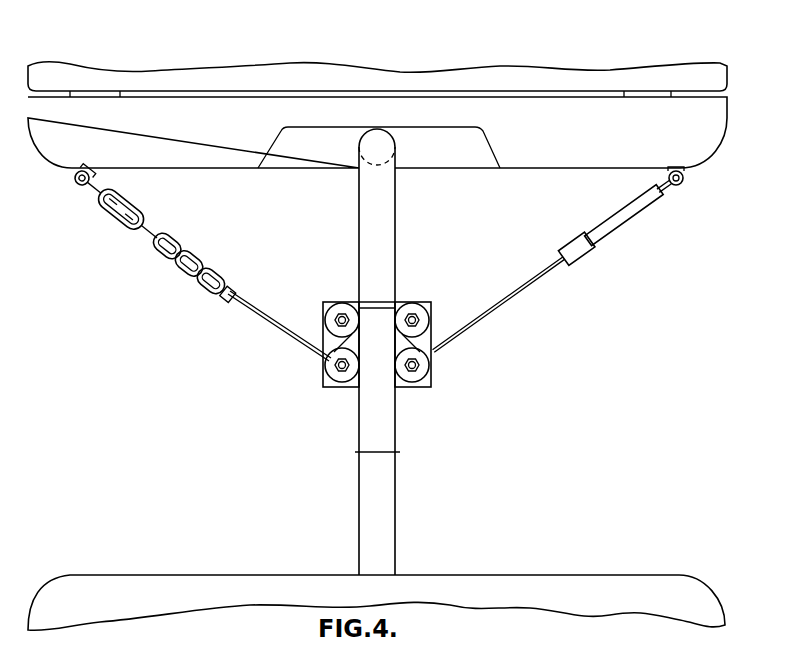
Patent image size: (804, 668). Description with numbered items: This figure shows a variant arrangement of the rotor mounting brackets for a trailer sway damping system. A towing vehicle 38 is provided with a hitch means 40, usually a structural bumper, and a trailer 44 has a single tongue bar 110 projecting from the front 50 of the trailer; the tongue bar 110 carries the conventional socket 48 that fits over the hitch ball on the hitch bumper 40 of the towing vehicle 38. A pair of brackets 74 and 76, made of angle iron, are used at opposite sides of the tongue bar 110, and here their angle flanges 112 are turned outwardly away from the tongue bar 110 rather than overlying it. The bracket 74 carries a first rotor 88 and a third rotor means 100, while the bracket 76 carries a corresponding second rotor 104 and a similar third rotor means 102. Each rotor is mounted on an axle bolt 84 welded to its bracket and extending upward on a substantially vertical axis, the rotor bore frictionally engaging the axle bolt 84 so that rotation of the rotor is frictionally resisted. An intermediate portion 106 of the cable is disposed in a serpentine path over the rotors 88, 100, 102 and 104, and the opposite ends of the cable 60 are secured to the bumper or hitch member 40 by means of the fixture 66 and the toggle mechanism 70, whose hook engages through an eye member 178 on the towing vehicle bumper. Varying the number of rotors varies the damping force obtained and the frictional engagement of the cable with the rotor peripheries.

The towing vehicle 38 is at (370, 74).
The hitch means 40 is at (508, 113).
The trailer 44 is at (398, 166).
The socket 48 is at (356, 150).
The front of the trailer 50 is at (433, 574).
The fixture 66 is at (96, 166).
The eye member 178 is at (684, 178).
The toggle mechanism 70 is at (625, 228).
The cable 60 is at (554, 281).
The bracket 74 is at (322, 340).
The bracket 76 is at (431, 335).
The intermediate portion of the cable 106 is at (384, 302).
The third rotor means 100 is at (338, 306).
The third rotor means 102 is at (414, 316).
The first rotor 88 is at (345, 377).
The second rotor 104 is at (413, 377).
The axle bolt 84 is at (336, 368).
The flange 112 is at (322, 386).
The tongue bar 110 is at (399, 452).